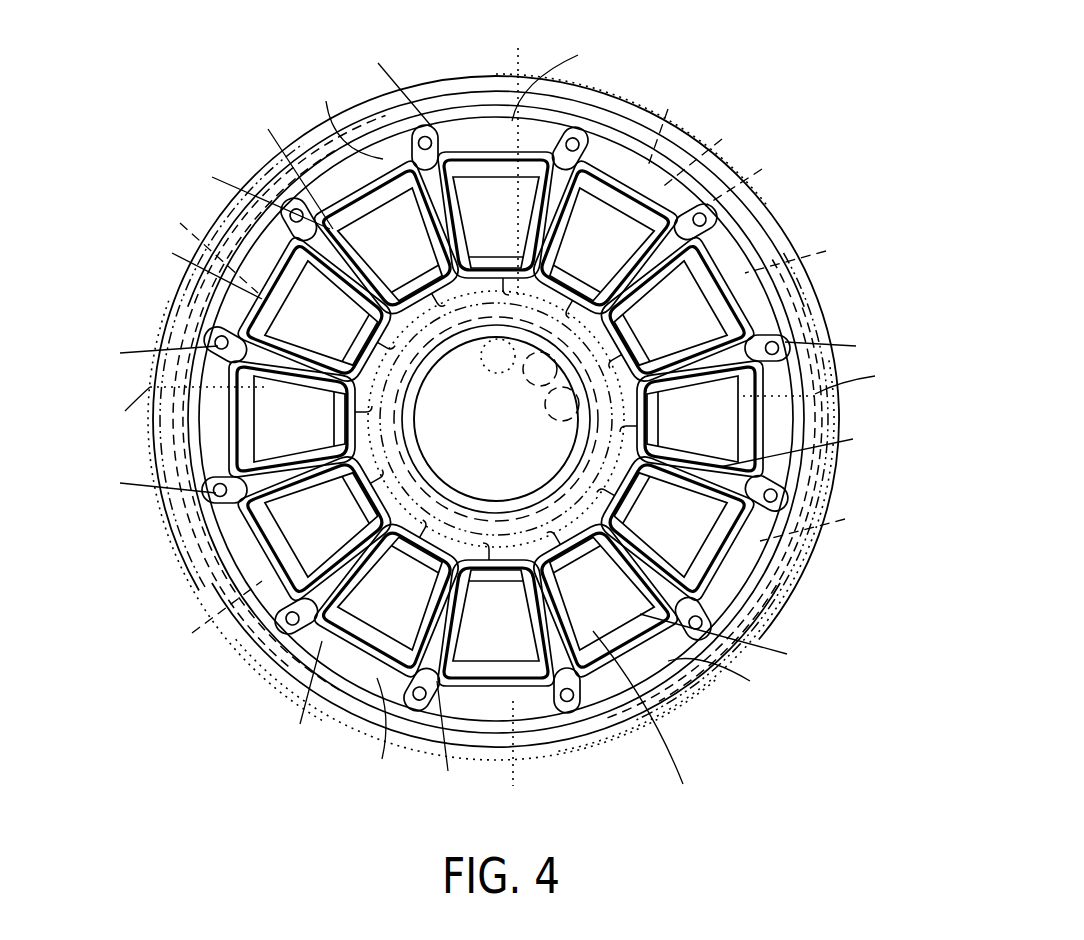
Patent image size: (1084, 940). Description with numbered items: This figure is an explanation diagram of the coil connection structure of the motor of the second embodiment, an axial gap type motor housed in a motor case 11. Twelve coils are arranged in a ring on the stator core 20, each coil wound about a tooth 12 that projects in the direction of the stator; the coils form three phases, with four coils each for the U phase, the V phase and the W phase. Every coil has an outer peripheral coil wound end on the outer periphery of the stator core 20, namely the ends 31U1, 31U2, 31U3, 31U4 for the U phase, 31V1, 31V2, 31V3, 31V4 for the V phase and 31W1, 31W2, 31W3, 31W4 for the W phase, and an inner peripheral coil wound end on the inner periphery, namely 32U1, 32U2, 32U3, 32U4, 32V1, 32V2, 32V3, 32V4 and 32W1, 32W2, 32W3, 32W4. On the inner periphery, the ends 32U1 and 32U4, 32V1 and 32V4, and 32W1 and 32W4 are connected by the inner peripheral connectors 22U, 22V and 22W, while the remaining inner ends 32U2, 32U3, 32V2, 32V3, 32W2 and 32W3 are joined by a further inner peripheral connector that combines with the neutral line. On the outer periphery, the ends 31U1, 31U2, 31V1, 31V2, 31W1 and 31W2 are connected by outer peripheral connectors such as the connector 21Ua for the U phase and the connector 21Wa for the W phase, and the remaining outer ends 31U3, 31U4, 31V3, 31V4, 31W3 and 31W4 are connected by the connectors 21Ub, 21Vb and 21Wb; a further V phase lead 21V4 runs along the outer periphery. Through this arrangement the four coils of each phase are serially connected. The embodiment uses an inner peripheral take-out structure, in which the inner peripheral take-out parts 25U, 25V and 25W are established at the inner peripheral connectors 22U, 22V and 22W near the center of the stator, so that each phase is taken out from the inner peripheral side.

The motor case 11 is at (303, 130).
The tooth 12 is at (467, 185).
The stator core 20 is at (443, 121).
The outer peripheral connector 21Ua is at (612, 93).
The outer peripheral connector 21Ub is at (176, 548).
The V-phase lead wire 21V4 is at (832, 453).
The outer peripheral connector 21Vb is at (193, 309).
The outer peripheral connector 21Wa is at (780, 611).
The outer peripheral connector 21Wb is at (300, 218).
The inner peripheral connector 22U is at (283, 164).
The inner peripheral connector 22V is at (194, 266).
The inner peripheral connector 22W is at (745, 172).
The inner peripheral take-out part 25U is at (481, 357).
The inner peripheral take-out part 25V is at (524, 384).
The inner peripheral take-out part 25W is at (548, 419).
The outer peripheral coil wound end 31U1 is at (511, 161).
The inner peripheral coil wound end 32U1 is at (562, 74).
The outer peripheral coil wound end 31U2 is at (839, 380).
The inner peripheral coil wound end 32U2 is at (818, 443).
The outer peripheral coil wound end 31U3 is at (543, 753).
The inner peripheral coil wound end 32U3 is at (450, 742).
The outer peripheral coil wound end 31U4 is at (165, 406).
The inner peripheral coil wound end 32U4 is at (137, 351).
The outer peripheral coil wound end 31V1 is at (680, 124).
The inner peripheral coil wound end 32V1 is at (711, 150).
The outer peripheral coil wound end 31V2 is at (832, 523).
The inner peripheral coil wound end 32V2 is at (747, 644).
The outer peripheral coil wound end 31V3 is at (366, 734).
The inner peripheral coil wound end 32V3 is at (292, 701).
The outer peripheral coil wound end 31V4 is at (191, 245).
The inner peripheral coil wound end 32V4 is at (238, 195).
The outer peripheral coil wound end 31W1 is at (816, 253).
The inner peripheral coil wound end 32W1 is at (852, 344).
The outer peripheral coil wound end 31W2 is at (741, 680).
The inner peripheral coil wound end 32W2 is at (668, 721).
The outer peripheral coil wound end 31W3 is at (193, 616).
The inner peripheral coil wound end 32W3 is at (136, 481).
The outer peripheral coil wound end 31W4 is at (339, 115).
The inner peripheral coil wound end 32W4 is at (371, 81).